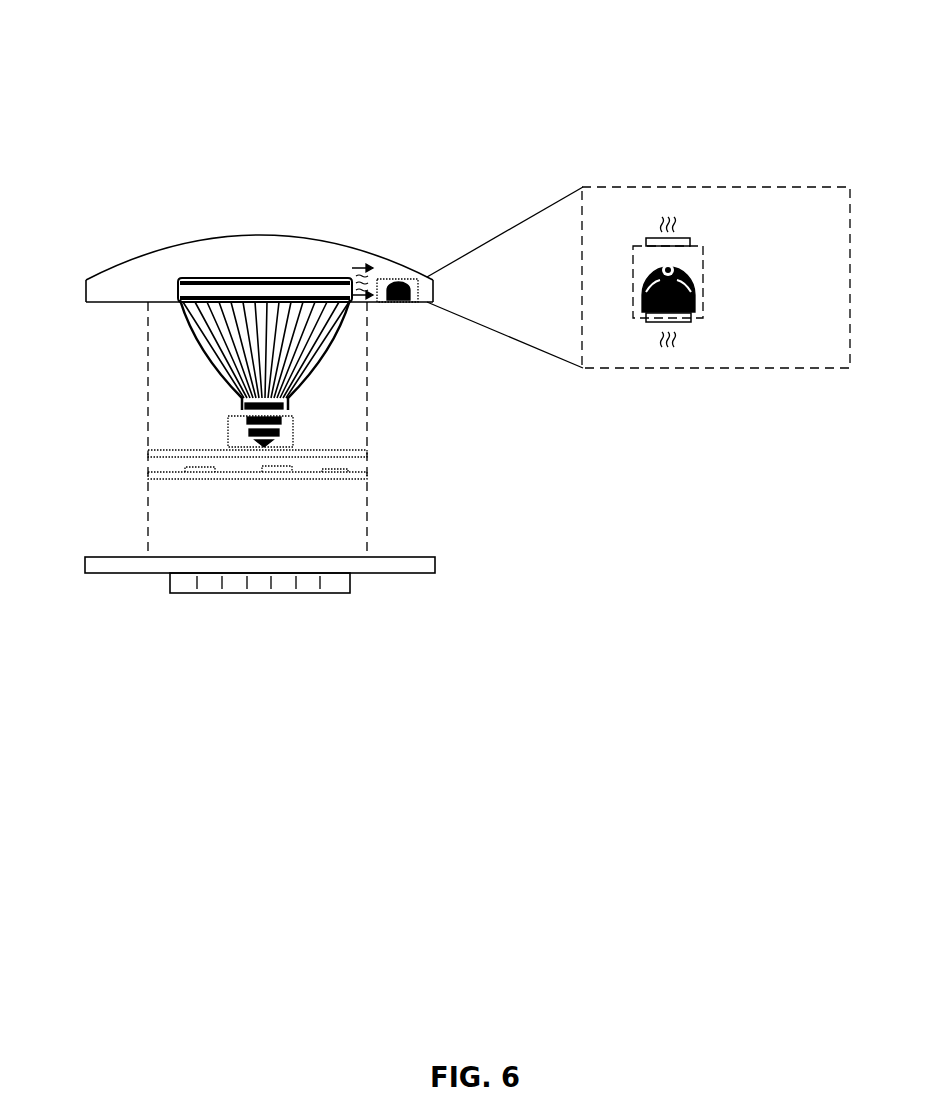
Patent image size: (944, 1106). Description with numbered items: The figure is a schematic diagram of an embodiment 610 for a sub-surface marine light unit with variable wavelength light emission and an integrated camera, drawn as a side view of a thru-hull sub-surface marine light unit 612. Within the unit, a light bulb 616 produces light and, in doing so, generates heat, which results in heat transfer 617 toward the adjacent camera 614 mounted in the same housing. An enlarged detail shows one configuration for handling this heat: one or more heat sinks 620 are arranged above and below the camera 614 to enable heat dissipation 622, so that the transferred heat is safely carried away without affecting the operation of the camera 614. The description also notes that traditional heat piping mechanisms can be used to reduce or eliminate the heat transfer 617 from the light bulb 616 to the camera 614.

The embodiment 610 is at (205, 32).
The sub-surface marine light unit 612 is at (417, 574).
The camera 614 is at (407, 282).
The light bulb 616 is at (332, 335).
The heat transfer 617 is at (359, 262).
The heat sink 620 is at (690, 240).
The heat dissipation 622 is at (677, 342).